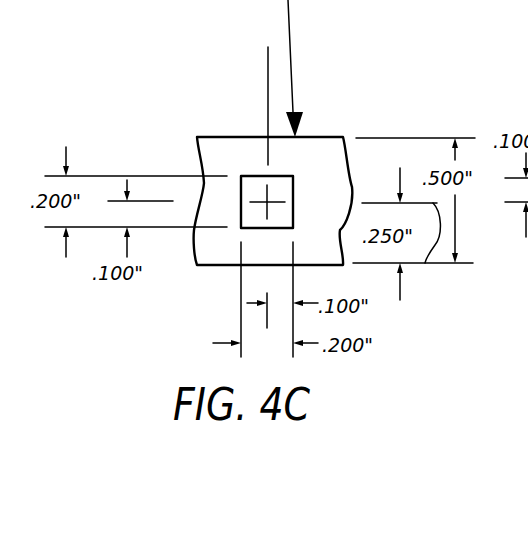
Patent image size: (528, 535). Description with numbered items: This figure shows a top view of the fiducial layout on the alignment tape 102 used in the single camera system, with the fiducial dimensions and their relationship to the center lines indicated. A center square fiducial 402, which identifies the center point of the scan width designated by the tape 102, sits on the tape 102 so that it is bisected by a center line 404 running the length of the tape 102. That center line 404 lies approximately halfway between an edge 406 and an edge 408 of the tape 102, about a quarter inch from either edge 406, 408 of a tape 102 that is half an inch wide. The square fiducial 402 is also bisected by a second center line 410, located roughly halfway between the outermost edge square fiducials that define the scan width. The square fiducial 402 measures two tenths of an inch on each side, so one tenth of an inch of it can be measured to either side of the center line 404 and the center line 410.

The tape 102 is at (387, 138).
The center square fiducial 402 is at (287, 176).
The center line 404 is at (425, 265).
The edge 406 is at (420, 138).
The edge 408 is at (437, 265).
The center line 410 is at (268, 62).